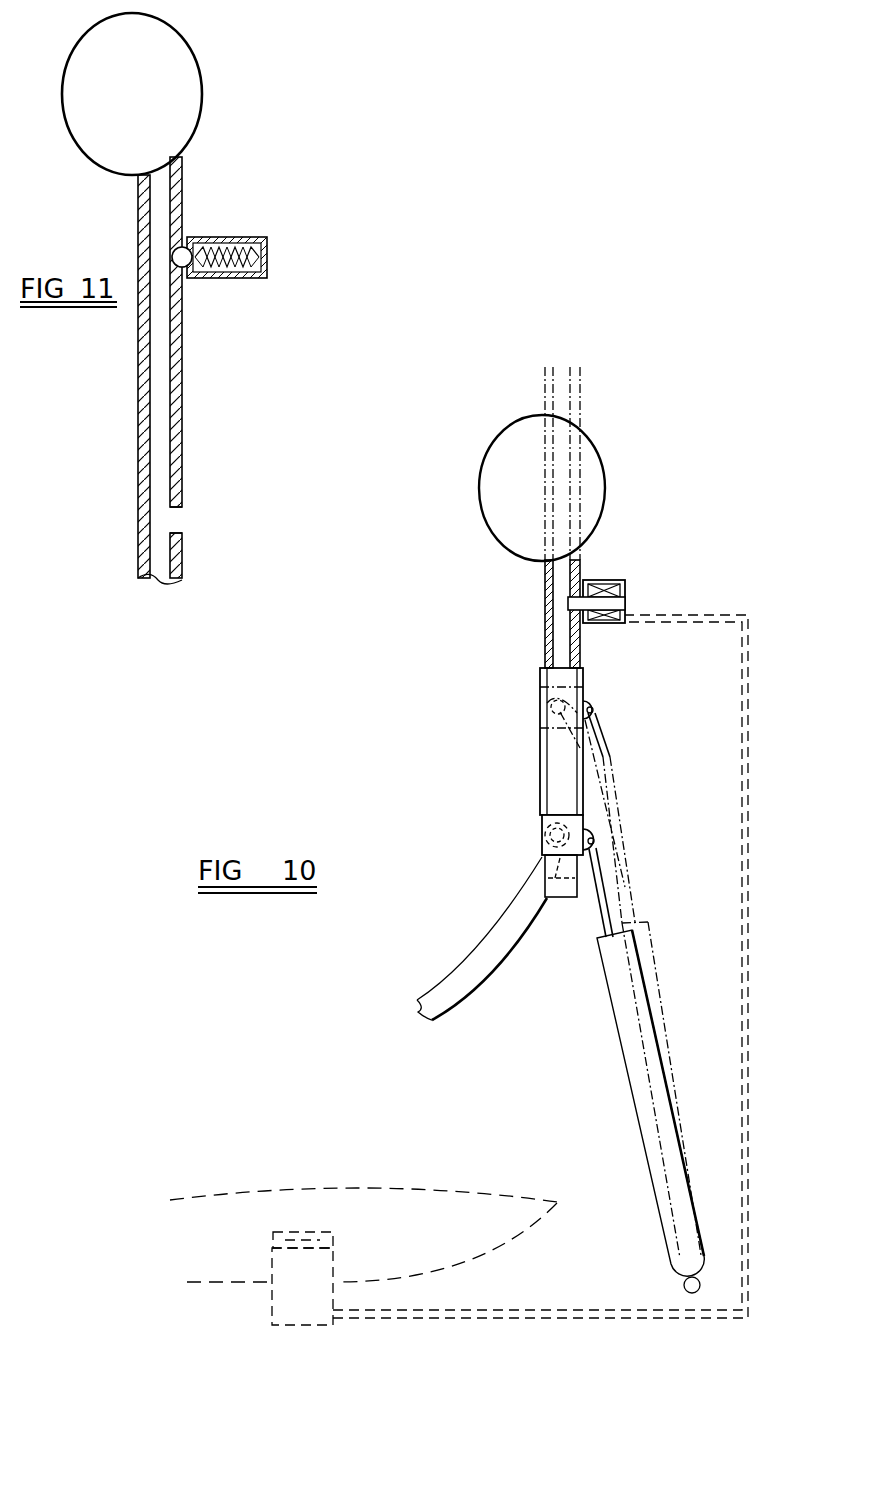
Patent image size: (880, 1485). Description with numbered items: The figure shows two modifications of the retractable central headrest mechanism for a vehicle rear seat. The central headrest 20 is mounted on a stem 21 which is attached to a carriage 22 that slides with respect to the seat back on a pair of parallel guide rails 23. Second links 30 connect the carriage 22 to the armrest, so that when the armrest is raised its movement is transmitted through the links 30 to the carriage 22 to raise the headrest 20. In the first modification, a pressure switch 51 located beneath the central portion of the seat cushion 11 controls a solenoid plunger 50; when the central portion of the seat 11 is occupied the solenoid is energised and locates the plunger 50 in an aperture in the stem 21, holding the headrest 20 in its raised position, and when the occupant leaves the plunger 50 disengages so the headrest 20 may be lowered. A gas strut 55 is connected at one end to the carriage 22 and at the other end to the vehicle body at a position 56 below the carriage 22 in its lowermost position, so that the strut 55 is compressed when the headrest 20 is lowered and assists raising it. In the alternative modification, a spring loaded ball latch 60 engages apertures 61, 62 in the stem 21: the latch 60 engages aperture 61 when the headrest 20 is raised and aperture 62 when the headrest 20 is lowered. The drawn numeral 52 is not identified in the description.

In FIG. 10, the seat cushion 11 is at (278, 1203).
In FIG. 11, the central headrest 20 is at (183, 97).
In FIG. 10, the central headrest 20 is at (481, 470).
In FIG. 11, the stem 21 is at (138, 377).
In FIG. 10, the stem 21 is at (577, 383).
In FIG. 10, the carriage 22 is at (543, 713).
In FIG. 10, the guide rails 23 is at (540, 770).
In FIG. 10, the second links 30 is at (590, 760).
In FIG. 10, the solenoid plunger 50 is at (623, 587).
In FIG. 10, the pressure switch 51 is at (272, 1297).
In FIG. 10, the locking pin 52 is at (575, 613).
In FIG. 10, the gas strut 55 is at (645, 1060).
In FIG. 10, the position 56 is at (700, 1285).
In FIG. 11, the spring loaded ball latch 60 is at (267, 253).
In FIG. 11, the aperture 61 is at (177, 520).
In FIG. 11, the aperture 62 is at (175, 257).